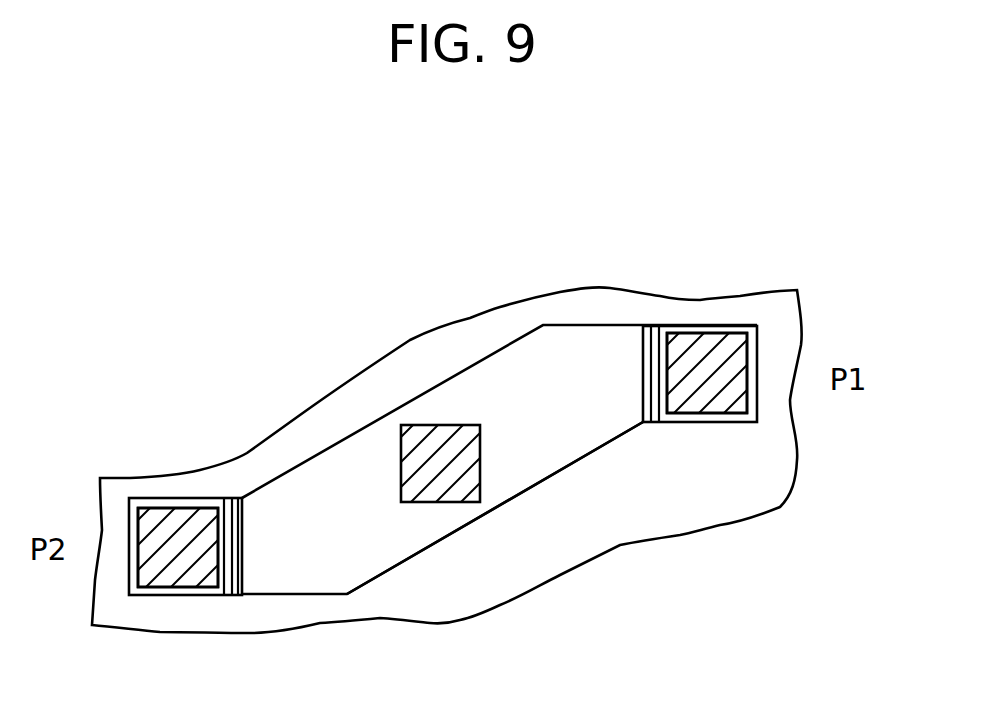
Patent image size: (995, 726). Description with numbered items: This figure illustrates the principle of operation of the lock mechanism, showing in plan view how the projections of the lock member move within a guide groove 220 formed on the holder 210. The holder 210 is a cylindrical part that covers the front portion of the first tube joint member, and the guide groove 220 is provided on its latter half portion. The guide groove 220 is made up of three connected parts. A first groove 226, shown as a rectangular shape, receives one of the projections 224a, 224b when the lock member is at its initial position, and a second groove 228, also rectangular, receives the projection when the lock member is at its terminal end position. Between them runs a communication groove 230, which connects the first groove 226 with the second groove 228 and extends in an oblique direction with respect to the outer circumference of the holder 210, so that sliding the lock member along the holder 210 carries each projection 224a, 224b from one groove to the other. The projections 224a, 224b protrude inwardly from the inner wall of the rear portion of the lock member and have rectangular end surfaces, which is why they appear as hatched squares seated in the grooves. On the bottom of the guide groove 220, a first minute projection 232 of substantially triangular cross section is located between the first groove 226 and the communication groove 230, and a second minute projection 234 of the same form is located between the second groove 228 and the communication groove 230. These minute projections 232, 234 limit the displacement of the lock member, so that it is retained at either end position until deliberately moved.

The holder 210 is at (777, 470).
The guide groove 220 is at (465, 372).
The projection 224a is at (710, 345).
The projection 224b is at (167, 577).
The first groove 226 is at (693, 416).
The second groove 228 is at (172, 510).
The communication groove 230 is at (514, 492).
The first minute projection 232 is at (650, 352).
The second minute projection 234 is at (248, 525).